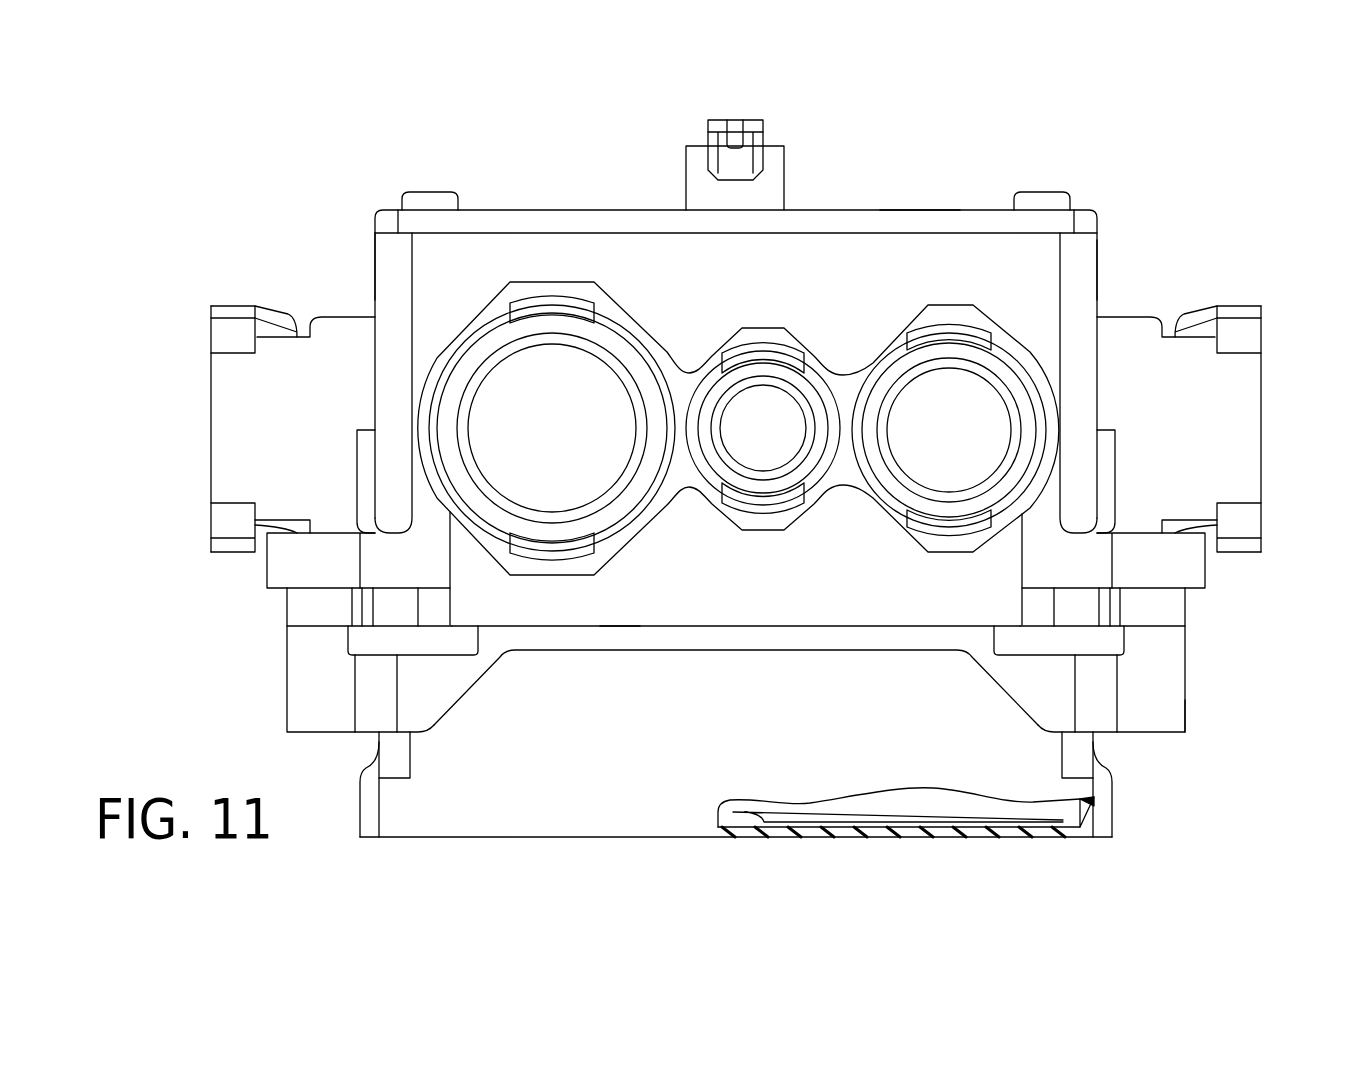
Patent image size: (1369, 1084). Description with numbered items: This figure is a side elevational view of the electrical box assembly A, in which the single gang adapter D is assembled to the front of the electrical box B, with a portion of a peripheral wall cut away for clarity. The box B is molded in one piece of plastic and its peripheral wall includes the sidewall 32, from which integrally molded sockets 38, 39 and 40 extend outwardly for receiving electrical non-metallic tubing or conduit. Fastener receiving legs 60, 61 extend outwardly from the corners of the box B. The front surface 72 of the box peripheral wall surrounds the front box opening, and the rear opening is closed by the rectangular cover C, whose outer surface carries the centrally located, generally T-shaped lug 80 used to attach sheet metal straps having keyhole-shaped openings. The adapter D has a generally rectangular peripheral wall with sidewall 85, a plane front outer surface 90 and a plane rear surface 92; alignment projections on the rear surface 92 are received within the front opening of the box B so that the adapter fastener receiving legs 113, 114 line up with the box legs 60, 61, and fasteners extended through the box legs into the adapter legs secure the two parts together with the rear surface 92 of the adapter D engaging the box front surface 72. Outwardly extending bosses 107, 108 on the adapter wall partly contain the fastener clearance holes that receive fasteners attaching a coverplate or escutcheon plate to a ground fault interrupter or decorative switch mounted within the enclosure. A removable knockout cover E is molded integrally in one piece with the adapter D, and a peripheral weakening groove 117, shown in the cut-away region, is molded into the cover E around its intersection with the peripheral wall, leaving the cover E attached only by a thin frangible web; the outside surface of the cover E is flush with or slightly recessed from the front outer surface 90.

The sidewall 32 is at (628, 255).
The socket 39 is at (628, 338).
The T-shaped lug 80 is at (753, 118).
The socket 38 is at (208, 410).
The socket 40 is at (1264, 410).
The fastener receiving leg 60 is at (285, 607).
The fastener receiving leg 61 is at (1187, 605).
The front surface of the box peripheral wall 72 is at (662, 630).
The rear surface of the adapter peripheral wall 92 is at (622, 625).
The adapter fastener receiving leg 113 is at (287, 690).
The adapter fastener receiving leg 114 is at (1188, 672).
The sidewall 85 is at (535, 808).
The outwardly extending boss 108 is at (357, 810).
The outwardly extending boss 107 is at (1120, 828).
The front outer surface of the adapter peripheral wall 90 is at (370, 840).
The peripheral weakening groove 117 is at (1080, 840).
The removable knockout cover E is at (878, 845).
The assembly A is at (258, 230).
The electrical box B is at (1103, 265).
The cover C is at (907, 203).
The single gang adapter D is at (1193, 716).